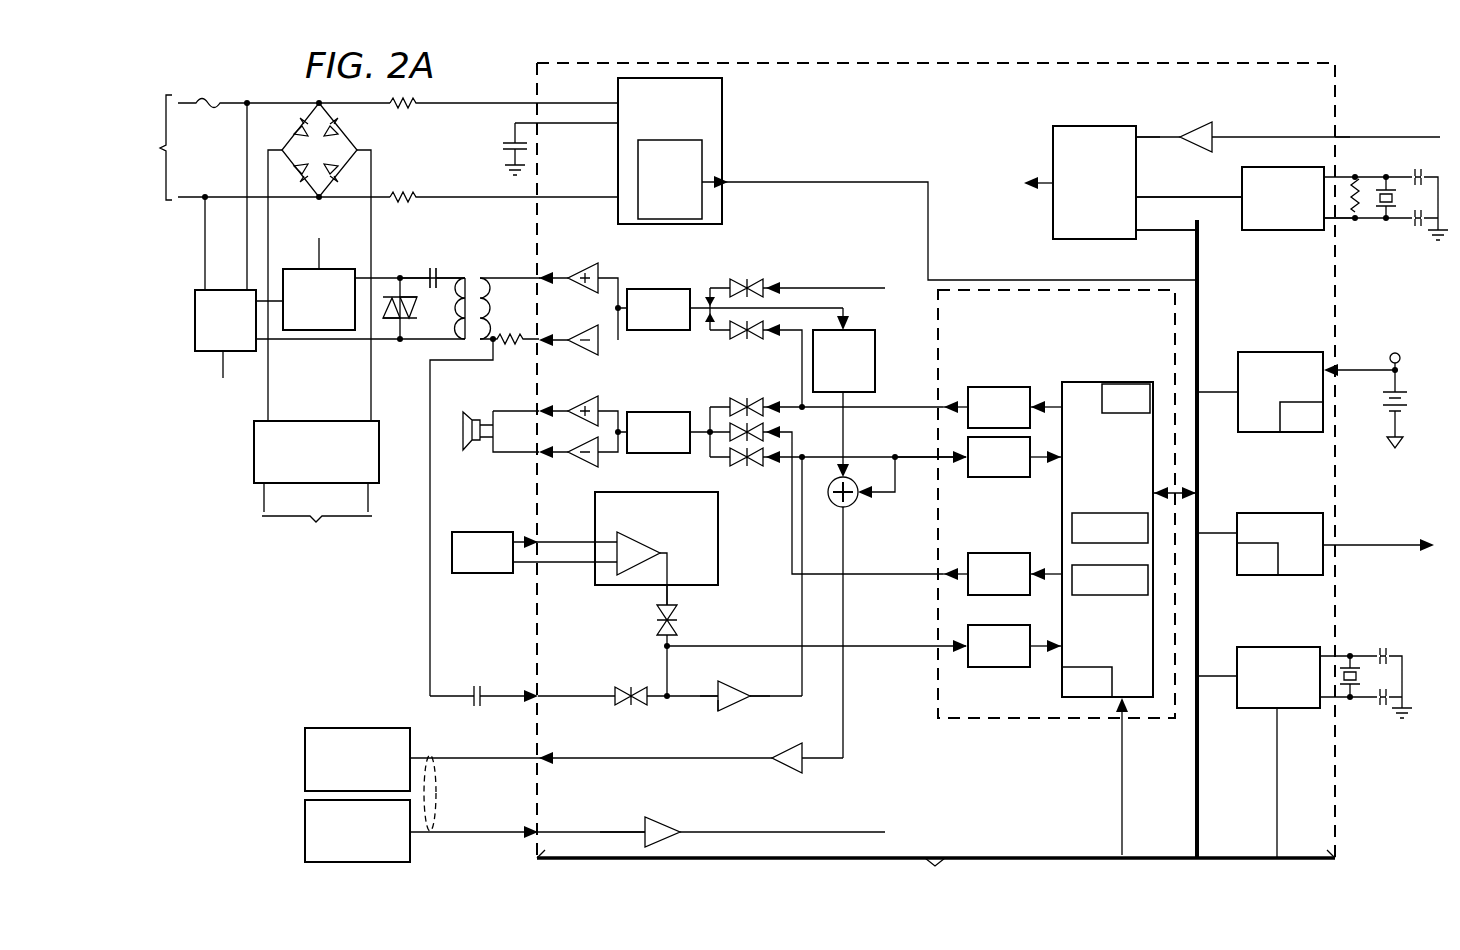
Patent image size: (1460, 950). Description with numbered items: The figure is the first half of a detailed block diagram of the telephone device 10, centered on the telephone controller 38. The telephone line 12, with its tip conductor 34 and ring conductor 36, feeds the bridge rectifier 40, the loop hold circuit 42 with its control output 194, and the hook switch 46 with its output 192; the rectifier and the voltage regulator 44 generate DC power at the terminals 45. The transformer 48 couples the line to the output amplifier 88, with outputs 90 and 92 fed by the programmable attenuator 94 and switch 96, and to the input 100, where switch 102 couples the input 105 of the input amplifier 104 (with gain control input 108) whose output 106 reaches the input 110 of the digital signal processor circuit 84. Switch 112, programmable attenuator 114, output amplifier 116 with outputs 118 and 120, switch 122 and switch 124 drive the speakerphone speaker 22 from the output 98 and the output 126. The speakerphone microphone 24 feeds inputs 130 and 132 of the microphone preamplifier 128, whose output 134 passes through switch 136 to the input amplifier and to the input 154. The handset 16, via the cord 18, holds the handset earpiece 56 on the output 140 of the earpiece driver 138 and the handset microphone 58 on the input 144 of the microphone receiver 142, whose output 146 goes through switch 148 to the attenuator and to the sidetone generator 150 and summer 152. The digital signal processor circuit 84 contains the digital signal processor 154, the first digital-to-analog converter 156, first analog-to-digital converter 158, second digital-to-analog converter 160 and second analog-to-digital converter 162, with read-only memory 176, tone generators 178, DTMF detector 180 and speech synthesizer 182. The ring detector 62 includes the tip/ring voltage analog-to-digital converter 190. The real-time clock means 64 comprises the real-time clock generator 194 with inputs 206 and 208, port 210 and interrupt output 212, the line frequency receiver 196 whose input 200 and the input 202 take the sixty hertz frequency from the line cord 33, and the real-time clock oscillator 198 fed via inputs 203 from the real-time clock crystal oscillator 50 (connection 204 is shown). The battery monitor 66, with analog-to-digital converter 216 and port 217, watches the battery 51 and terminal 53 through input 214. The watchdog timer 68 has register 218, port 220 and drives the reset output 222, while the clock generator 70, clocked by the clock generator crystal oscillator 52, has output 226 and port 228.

The telephone device 10 is at (170, 582).
The telephone line 12 is at (178, 147).
The handset 16 is at (236, 790).
The cord 18 is at (437, 792).
The speakerphone speaker 22 is at (462, 416).
The speakerphone microphone 24 is at (472, 574).
The line cord 33 is at (1430, 136).
The tip conductor 34 is at (182, 103).
The ring conductor 36 is at (182, 198).
The telephone controller 38 is at (1345, 66).
The bridge rectifier 40 is at (380, 137).
The loop hold circuit 42 is at (195, 320).
The voltage regulator 44 is at (254, 458).
The terminals 45 is at (317, 518).
The hook switch 46 is at (319, 331).
The transformer 48 is at (472, 277).
The real-time clock crystal oscillator 50 is at (1408, 240).
The battery 51 is at (1402, 428).
The clock generator crystal oscillator 52 is at (1384, 736).
The terminal 53 is at (1401, 356).
The handset earpiece 56 is at (305, 754).
The handset microphone 58 is at (305, 832).
The ring detector 62 is at (722, 120).
The real-time clock means 64 is at (1000, 118).
The battery monitor 66 is at (1280, 352).
The watchdog timer 68 is at (1272, 513).
The clock generator 70 is at (1286, 647).
The digital signal processor circuit 84 is at (1020, 720).
The output amplifier 88 is at (576, 260).
The output 90 is at (537, 278).
The output 92 is at (535, 338).
The programmable attenuator 94 is at (660, 289).
The switch 96 is at (740, 337).
The output 98 is at (940, 406).
The input 100 is at (528, 692).
The switch 102 is at (612, 702).
The input amplifier 104 is at (752, 692).
The input 105 is at (710, 694).
The output 106 is at (760, 704).
The input 108 is at (724, 712).
The input 110 is at (934, 457).
The switch 112 is at (775, 428).
The programmable attenuator 114 is at (664, 412).
The output amplifier 116 is at (608, 398).
The output 118 is at (540, 408).
The output 120 is at (540, 458).
The switch 122 is at (780, 384).
The switch 124 is at (746, 466).
The output 126 is at (930, 576).
The microphone preamplifier 128 is at (718, 568).
The input 130 is at (533, 540).
The input 132 is at (532, 566).
The output 134 is at (668, 592).
The switch 136 is at (658, 625).
The earpiece driver 138 is at (792, 774).
The output 140 is at (534, 757).
The microphone receiver 142 is at (640, 828).
The input 144 is at (532, 836).
The output 146 is at (684, 828).
The switch 148 is at (750, 282).
The sidetone generator 150 is at (860, 326).
The summer 152 is at (838, 508).
The digital signal processor 154 is at (936, 648).
The first digital-to-analog converter 156 is at (990, 387).
The first analog-to-digital converter 158 is at (993, 478).
The second digital-to-analog converter 160 is at (990, 552).
The second analog-to-digital converter 162 is at (996, 668).
The read-only memory 176 is at (1128, 384).
The tone generators 178 is at (1086, 698).
The DTMF detector 180 is at (1110, 596).
The speech synthesizer 182 is at (1108, 513).
The tip/ring voltage analog-to-digital converter 190 is at (682, 220).
The output 192 is at (319, 252).
The control output 194 is at (223, 364).
The line frequency receiver 196 is at (1195, 122).
The real-time clock oscillator 198 is at (1286, 166).
The input 200 is at (1214, 136).
The input 202 is at (1338, 132).
The inputs 203 is at (1330, 220).
The oscillator line 204 is at (1240, 196).
The input 206 is at (1138, 130).
The input 208 is at (1150, 196).
The port 210 is at (1138, 231).
The interrupt output 212 is at (1052, 182).
The input 214 is at (1332, 368).
The analog-to-digital converter 216 is at (1300, 432).
The port 217 is at (1232, 390).
The register 218 is at (1252, 576).
The port 220 is at (1234, 532).
The reset output 222 is at (1330, 546).
The output 226 is at (1276, 710).
The port 228 is at (1236, 680).